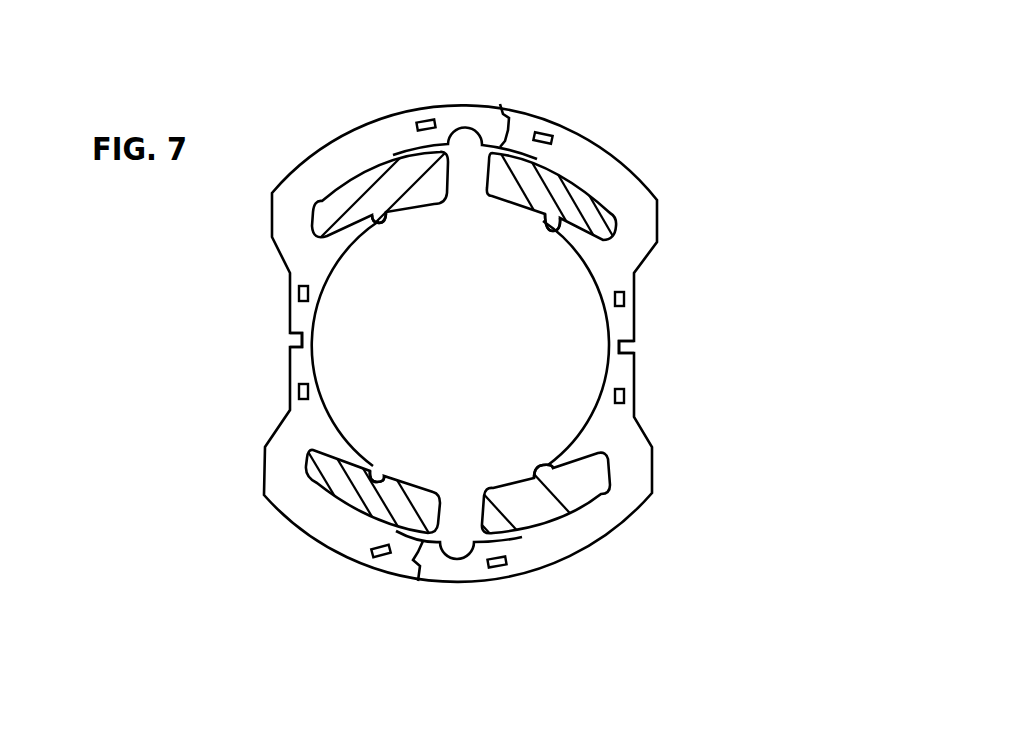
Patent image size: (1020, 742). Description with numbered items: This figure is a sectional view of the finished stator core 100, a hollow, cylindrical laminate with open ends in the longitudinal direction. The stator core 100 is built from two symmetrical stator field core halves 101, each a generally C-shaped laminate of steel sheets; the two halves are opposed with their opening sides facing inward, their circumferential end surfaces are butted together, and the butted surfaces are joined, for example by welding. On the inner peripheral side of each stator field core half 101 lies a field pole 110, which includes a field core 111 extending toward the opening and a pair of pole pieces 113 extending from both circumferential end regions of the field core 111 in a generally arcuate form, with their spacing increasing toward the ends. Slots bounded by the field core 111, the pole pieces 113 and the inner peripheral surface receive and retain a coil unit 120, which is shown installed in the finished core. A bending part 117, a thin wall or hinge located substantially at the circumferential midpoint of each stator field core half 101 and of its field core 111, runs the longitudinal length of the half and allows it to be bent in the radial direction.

The stator core 100 is at (657, 158).
The stator field core half 101 is at (333, 134).
The field pole 110 is at (286, 301).
The field core 111 is at (312, 364).
The pole piece 113 is at (372, 224).
The bending part 117 is at (302, 341).
The coil unit 120 is at (357, 507).